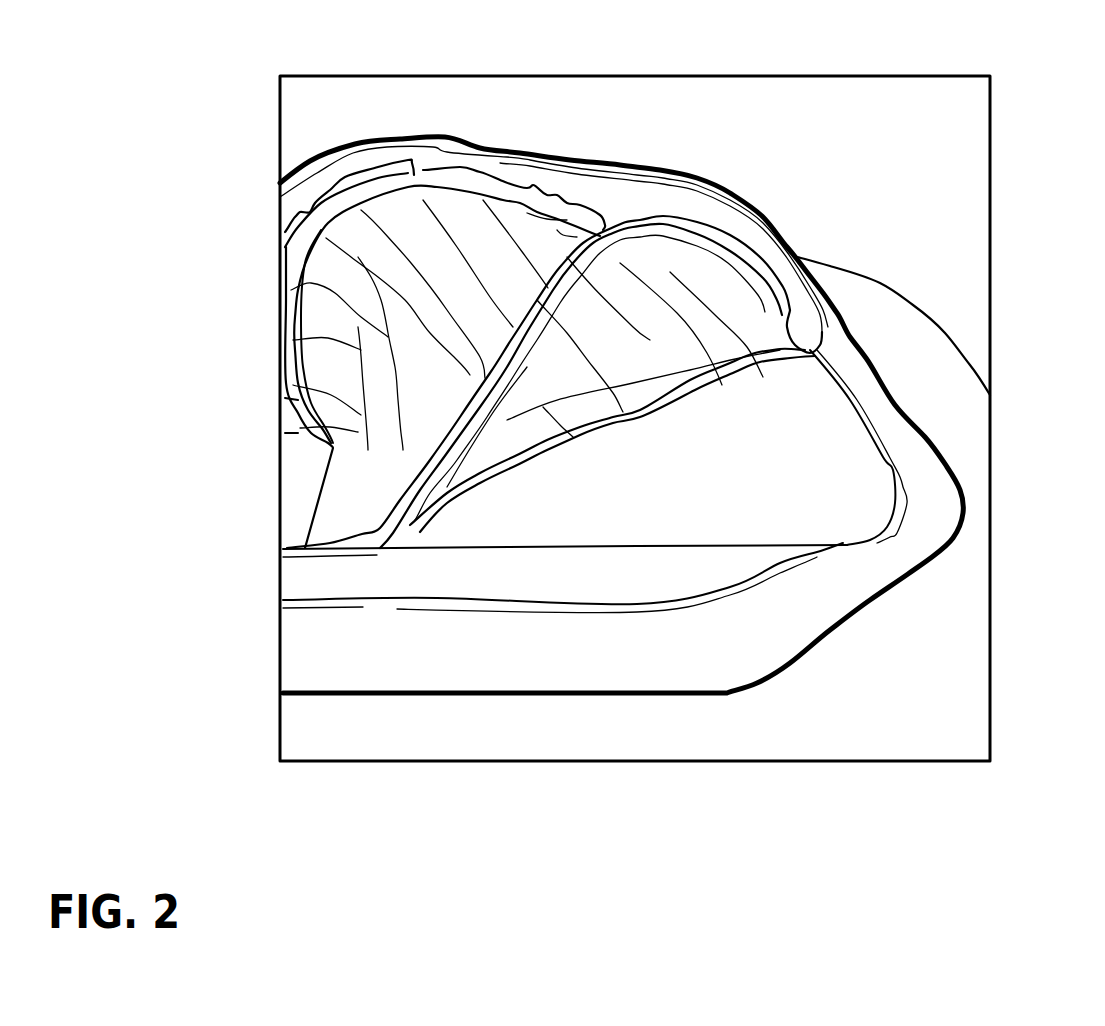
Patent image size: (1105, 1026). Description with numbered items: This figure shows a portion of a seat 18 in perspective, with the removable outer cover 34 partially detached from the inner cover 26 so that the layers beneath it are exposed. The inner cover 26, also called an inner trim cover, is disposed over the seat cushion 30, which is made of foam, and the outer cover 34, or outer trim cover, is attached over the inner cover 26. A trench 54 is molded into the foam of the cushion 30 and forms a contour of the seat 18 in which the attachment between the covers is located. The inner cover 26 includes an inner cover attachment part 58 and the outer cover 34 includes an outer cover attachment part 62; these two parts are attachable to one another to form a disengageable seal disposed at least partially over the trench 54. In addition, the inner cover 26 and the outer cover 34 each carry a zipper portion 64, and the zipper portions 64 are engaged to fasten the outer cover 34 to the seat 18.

The seat 18 is at (943, 386).
The inner cover 26 is at (793, 432).
The seat cushion 30 is at (958, 562).
The outer cover 34 is at (670, 278).
The trench 54 is at (868, 548).
The inner cover attachment part 58 is at (890, 452).
The outer cover attachment part 62 is at (630, 200).
The zipper portion 64 is at (703, 175).